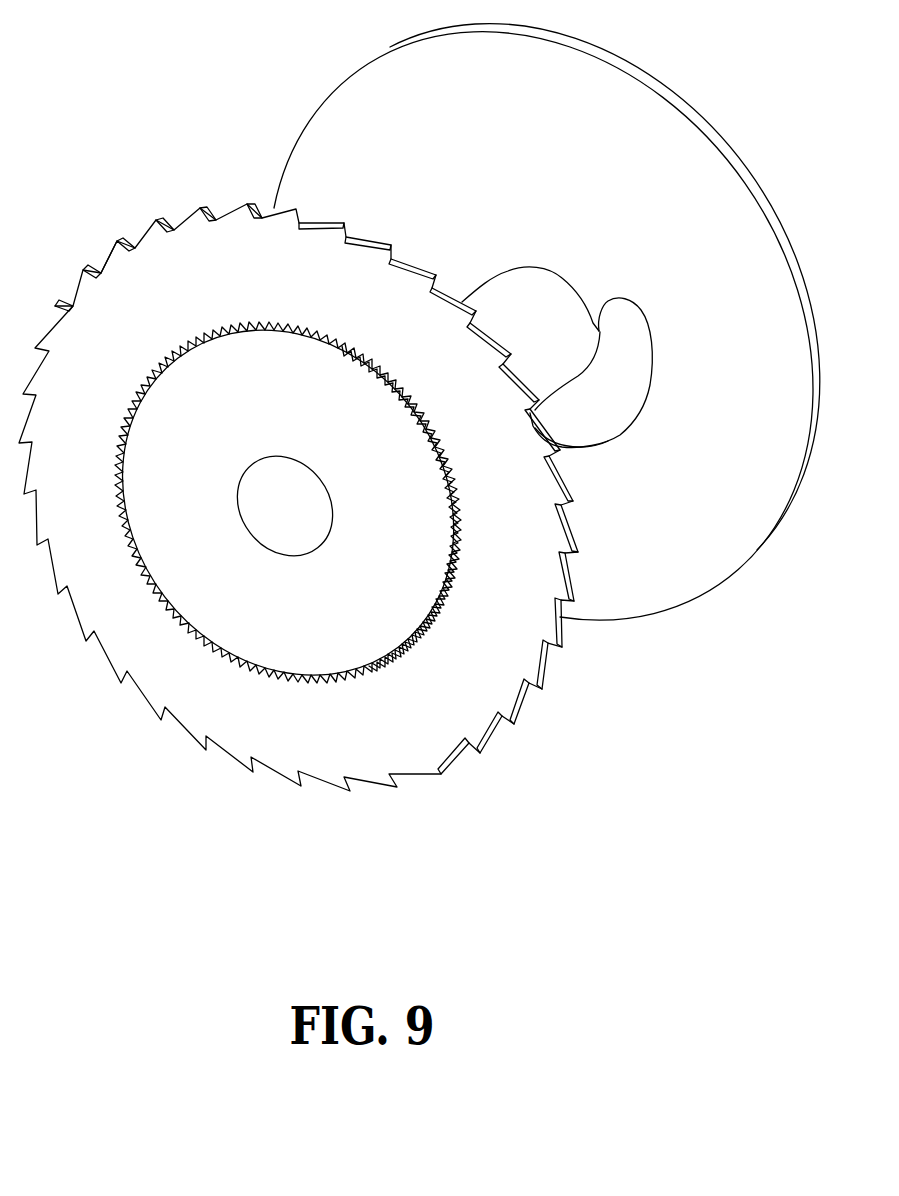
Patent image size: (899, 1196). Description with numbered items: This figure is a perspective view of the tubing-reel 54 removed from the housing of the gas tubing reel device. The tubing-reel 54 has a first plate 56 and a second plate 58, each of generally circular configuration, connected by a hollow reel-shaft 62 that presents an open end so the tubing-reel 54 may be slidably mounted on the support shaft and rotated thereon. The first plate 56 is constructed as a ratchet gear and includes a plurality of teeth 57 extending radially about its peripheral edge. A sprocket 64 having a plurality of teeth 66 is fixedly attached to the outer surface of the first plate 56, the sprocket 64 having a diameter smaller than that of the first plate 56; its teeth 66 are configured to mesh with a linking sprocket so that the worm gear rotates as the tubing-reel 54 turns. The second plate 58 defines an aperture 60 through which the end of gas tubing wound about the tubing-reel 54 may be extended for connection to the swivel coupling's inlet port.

The tubing-reel 54 is at (201, 93).
The first plate 56 is at (157, 344).
The teeth 57 is at (98, 262).
The second plate 58 is at (497, 124).
The aperture 60 is at (635, 302).
The reel-shaft 62 is at (504, 268).
The sprocket 64 is at (404, 585).
The teeth 66 is at (455, 501).